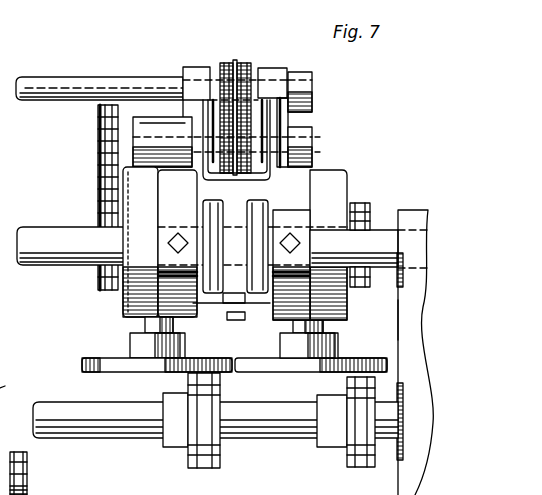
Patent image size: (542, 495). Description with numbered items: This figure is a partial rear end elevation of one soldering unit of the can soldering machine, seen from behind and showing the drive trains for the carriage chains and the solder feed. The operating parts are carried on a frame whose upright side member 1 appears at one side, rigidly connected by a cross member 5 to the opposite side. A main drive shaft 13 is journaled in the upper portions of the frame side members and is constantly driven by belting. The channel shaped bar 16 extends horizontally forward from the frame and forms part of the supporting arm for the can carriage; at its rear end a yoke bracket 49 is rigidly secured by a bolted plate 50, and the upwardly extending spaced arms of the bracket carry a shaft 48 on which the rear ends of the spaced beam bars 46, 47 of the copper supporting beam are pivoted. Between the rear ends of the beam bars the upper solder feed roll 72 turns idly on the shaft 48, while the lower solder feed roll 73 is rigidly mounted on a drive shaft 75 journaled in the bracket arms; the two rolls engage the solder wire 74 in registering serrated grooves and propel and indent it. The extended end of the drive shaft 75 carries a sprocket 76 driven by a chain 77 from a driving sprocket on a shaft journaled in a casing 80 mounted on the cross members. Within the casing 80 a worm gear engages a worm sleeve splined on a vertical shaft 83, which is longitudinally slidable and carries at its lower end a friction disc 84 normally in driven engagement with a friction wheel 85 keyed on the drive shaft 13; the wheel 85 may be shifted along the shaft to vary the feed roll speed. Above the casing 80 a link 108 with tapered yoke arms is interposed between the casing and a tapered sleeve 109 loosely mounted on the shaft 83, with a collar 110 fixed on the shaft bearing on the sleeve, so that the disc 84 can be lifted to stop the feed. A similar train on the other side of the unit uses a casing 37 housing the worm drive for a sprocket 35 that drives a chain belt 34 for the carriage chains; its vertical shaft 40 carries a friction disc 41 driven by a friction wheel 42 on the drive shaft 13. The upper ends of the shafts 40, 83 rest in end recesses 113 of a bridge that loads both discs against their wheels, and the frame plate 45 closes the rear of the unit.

The upright side member 1 is at (398, 322).
The cross member 5 is at (38, 232).
The main drive shaft 13 is at (118, 428).
The channel shaped bar 16 is at (157, 273).
The chain belt 34 is at (376, 213).
The sprocket 35 is at (362, 202).
The casing 37 is at (347, 298).
The vertical shaft 40 is at (327, 327).
The friction disc 41 is at (278, 367).
The friction wheel 42 is at (337, 456).
The frame plate 45 is at (380, 352).
The beam bar 46 is at (255, 65).
The beam bar 47 is at (219, 63).
The shaft 48 is at (154, 83).
The yoke bracket 49 is at (192, 66).
The bolted plate 50 is at (212, 303).
The upper solder feed roll 72 is at (236, 65).
The lower solder feed roll 73 is at (250, 152).
The solder wire 74 is at (290, 88).
The drive shaft 75 is at (118, 71).
The sprocket 76 is at (98, 115).
The chain 77 is at (97, 172).
The casing 80 is at (130, 198).
The vertical shaft 83 is at (143, 323).
The friction disc 84 is at (104, 362).
The friction wheel 85 is at (220, 466).
The link 108 is at (70, 494).
The tapered sleeve 109 is at (33, 490).
The collar 110 is at (28, 458).
The end recess 113 is at (2, 388).